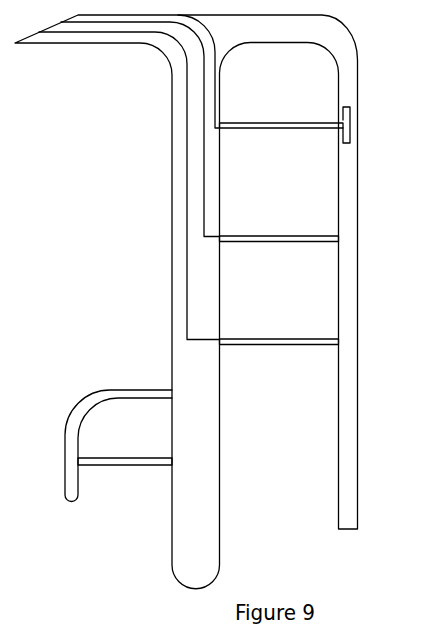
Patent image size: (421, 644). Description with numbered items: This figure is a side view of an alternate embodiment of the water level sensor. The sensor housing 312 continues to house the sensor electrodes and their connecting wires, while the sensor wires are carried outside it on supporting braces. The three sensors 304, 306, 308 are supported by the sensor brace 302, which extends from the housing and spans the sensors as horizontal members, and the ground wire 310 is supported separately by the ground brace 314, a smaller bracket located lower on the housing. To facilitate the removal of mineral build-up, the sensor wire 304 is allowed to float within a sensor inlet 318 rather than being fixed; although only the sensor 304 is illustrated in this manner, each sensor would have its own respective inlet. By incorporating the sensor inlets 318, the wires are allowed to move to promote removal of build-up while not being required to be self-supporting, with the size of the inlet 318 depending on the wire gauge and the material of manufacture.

The sensor brace 302 is at (340, 49).
The sensor 304 is at (323, 128).
The sensor 306 is at (308, 242).
The sensor 308 is at (310, 345).
The ground wire 310 is at (134, 465).
The sensor housing 312 is at (183, 152).
The ground brace 314 is at (67, 443).
The sensor inlet 318 is at (348, 107).